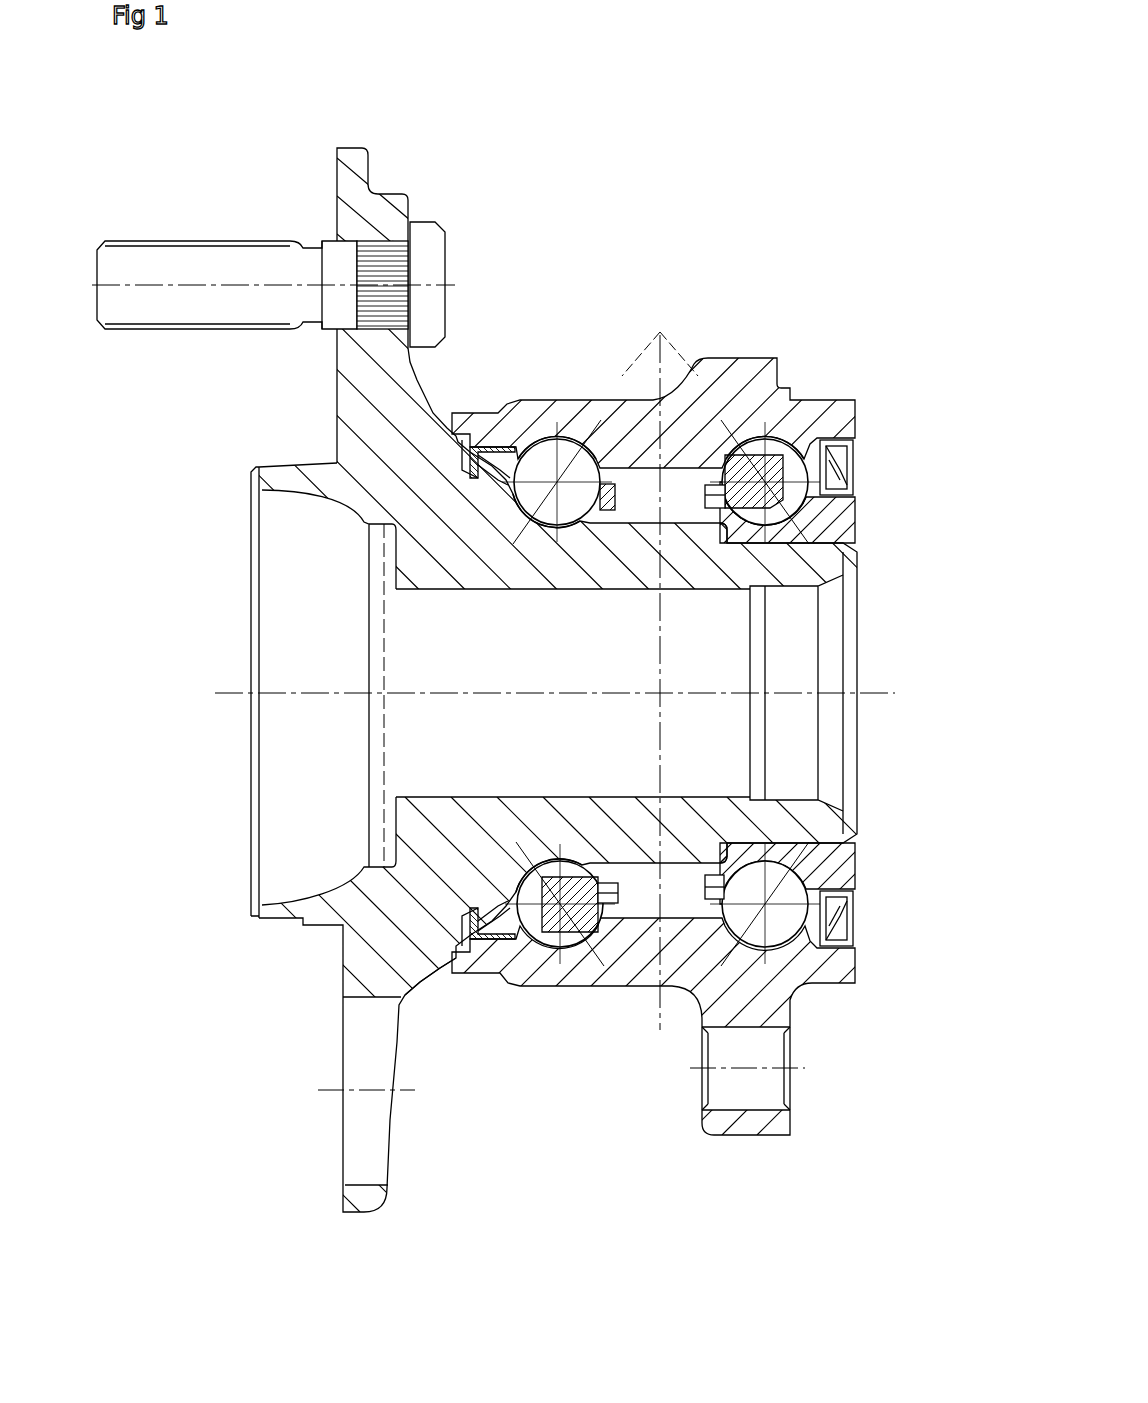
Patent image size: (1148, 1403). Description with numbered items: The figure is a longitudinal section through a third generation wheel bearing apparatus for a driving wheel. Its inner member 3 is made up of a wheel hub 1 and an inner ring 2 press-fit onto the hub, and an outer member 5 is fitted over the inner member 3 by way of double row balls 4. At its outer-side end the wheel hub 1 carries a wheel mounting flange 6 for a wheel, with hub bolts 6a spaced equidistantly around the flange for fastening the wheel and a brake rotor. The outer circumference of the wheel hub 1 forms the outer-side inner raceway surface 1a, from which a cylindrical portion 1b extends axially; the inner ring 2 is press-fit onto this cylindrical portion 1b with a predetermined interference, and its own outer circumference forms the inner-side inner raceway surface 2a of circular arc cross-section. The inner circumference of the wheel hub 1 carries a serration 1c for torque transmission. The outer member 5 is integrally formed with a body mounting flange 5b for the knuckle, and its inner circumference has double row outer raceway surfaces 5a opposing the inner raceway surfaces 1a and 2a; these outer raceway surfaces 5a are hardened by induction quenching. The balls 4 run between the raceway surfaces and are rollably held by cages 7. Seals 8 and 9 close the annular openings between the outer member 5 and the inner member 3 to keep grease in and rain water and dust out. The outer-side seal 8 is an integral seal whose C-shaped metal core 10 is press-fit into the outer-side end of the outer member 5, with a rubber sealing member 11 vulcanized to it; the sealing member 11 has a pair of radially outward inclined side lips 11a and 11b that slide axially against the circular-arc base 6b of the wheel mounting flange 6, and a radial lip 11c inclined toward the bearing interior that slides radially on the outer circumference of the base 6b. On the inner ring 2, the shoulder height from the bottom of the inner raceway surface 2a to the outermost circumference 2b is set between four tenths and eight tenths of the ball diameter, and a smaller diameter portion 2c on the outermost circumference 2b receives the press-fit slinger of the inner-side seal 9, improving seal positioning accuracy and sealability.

The wheel hub 1 is at (372, 513).
The inner raceway surface 1a is at (566, 518).
The cylindrical portion 1b is at (713, 880).
The serration 1c is at (530, 593).
The inner ring 2 is at (795, 535).
The inner raceway surface 2a is at (748, 522).
The outermost circumference 2b is at (842, 932).
The smaller diameter portion 2c is at (845, 903).
The inner member 3 is at (320, 573).
The ball 4 is at (573, 937).
The outer member 5 is at (722, 358).
The outer raceway surface 5a is at (572, 462).
The body mounting flange 5b is at (742, 1136).
The wheel mounting flange 6 is at (350, 152).
The hub bolt 6a is at (216, 262).
The base 6b is at (460, 444).
The cage 7 is at (655, 866).
The seal 8 is at (178, 950).
The seal 9 is at (843, 946).
The metal core 10 is at (484, 974).
The sealing member 11 is at (240, 930).
The side lip 11a is at (467, 958).
The side lip 11b is at (478, 932).
The radial lip 11c is at (493, 913).